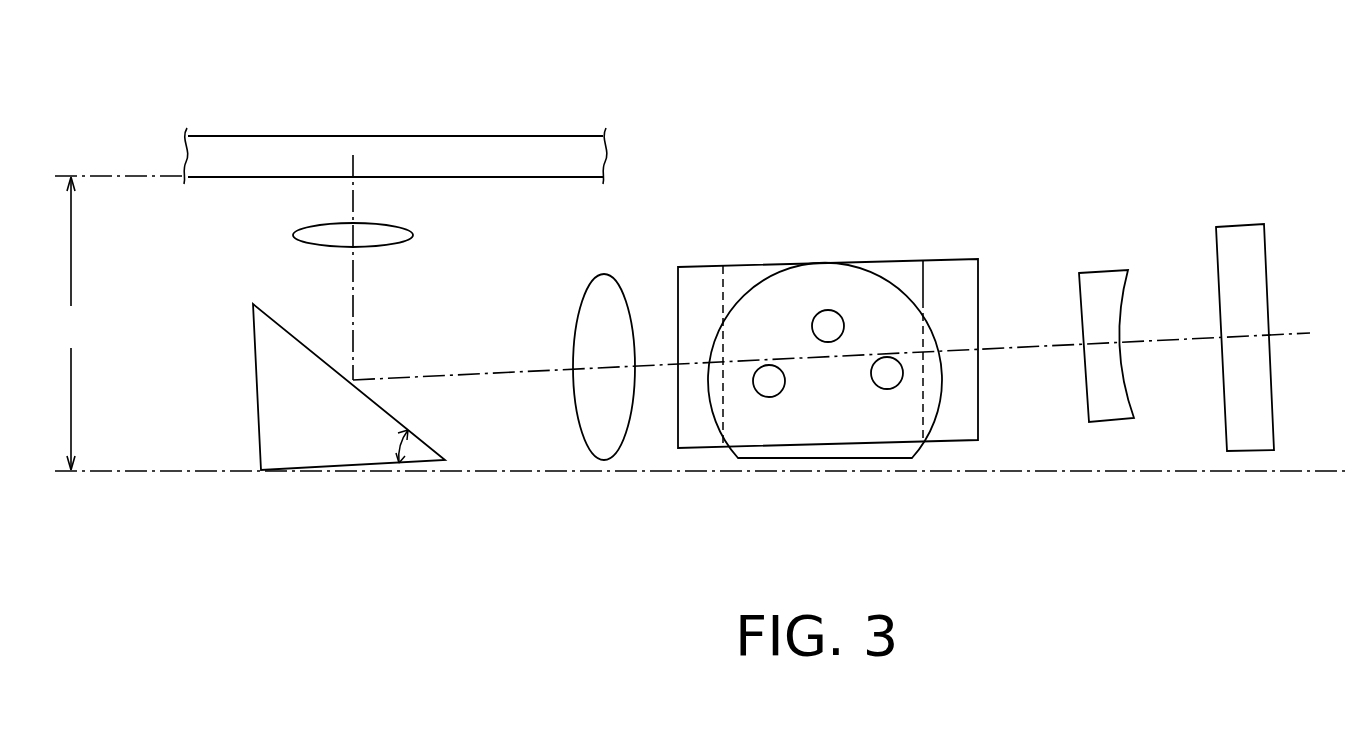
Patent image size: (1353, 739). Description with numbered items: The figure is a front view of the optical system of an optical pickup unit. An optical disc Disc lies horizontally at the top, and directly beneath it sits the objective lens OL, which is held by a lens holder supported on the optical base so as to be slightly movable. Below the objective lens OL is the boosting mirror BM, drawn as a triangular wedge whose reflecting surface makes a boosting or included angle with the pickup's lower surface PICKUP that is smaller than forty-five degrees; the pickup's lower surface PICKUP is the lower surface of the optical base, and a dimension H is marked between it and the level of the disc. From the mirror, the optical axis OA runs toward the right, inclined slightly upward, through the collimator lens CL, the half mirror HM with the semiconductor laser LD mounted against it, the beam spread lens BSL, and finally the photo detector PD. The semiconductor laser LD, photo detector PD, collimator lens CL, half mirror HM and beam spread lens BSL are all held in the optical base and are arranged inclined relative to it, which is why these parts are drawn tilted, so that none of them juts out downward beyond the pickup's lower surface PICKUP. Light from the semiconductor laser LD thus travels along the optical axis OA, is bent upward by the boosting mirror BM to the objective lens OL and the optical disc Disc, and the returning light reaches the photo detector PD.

The optical disc Disc is at (530, 136).
The objective lens OL is at (413, 235).
The boosting mirror BM is at (282, 378).
The height of pickup H is at (71, 323).
The collimator lens CL is at (590, 420).
The half mirror HM is at (736, 278).
The semiconductor laser LD is at (768, 432).
The optical axis OA is at (1047, 352).
The beam spread lens BSL is at (1103, 283).
The photo detector PD is at (1243, 243).
The pickup's lower surface PICKUP is at (183, 473).